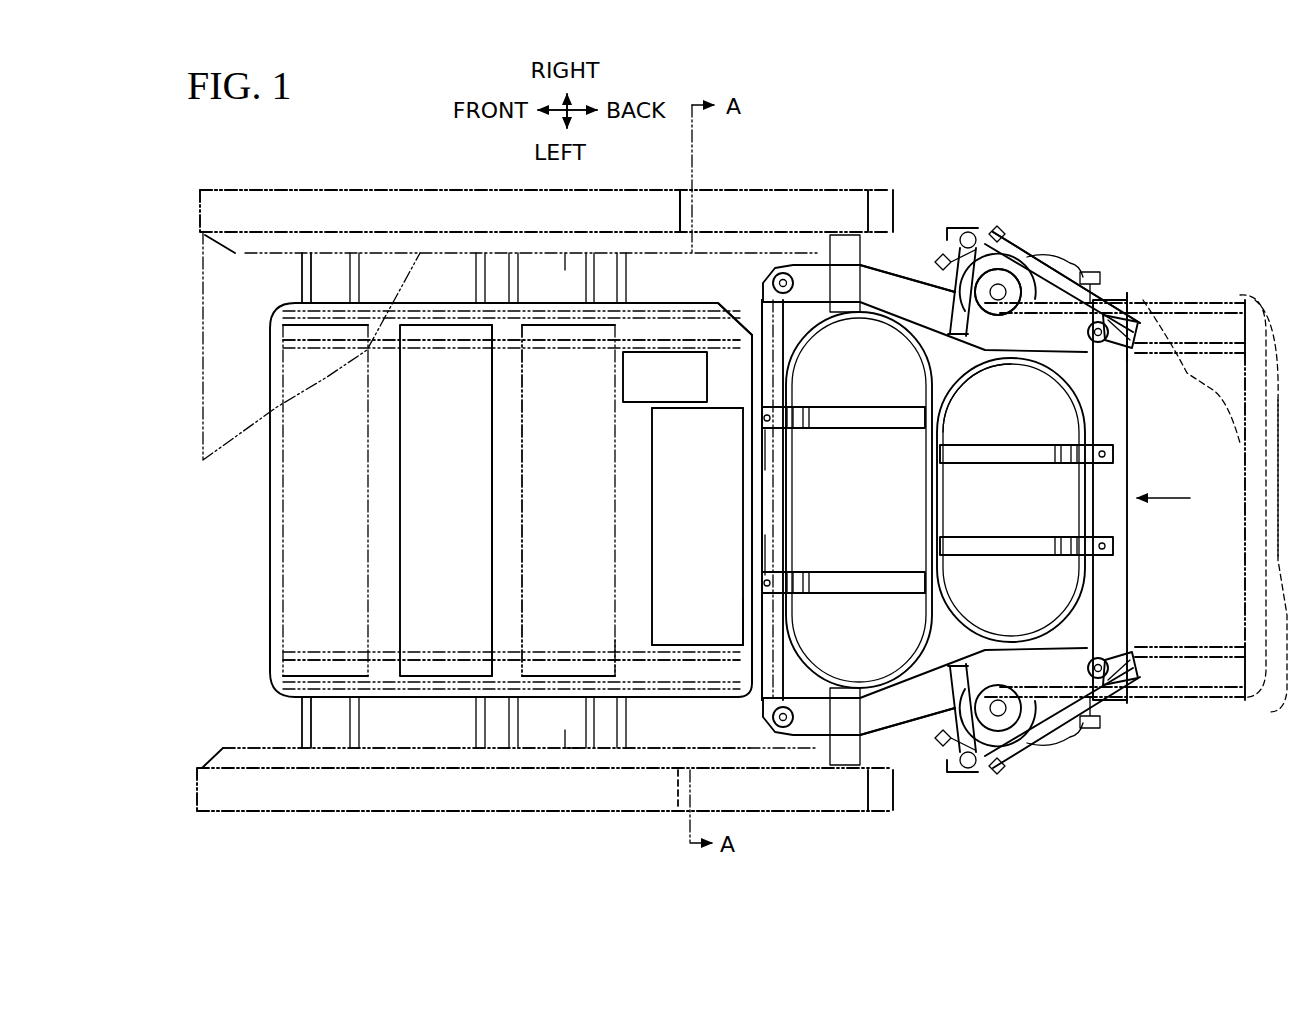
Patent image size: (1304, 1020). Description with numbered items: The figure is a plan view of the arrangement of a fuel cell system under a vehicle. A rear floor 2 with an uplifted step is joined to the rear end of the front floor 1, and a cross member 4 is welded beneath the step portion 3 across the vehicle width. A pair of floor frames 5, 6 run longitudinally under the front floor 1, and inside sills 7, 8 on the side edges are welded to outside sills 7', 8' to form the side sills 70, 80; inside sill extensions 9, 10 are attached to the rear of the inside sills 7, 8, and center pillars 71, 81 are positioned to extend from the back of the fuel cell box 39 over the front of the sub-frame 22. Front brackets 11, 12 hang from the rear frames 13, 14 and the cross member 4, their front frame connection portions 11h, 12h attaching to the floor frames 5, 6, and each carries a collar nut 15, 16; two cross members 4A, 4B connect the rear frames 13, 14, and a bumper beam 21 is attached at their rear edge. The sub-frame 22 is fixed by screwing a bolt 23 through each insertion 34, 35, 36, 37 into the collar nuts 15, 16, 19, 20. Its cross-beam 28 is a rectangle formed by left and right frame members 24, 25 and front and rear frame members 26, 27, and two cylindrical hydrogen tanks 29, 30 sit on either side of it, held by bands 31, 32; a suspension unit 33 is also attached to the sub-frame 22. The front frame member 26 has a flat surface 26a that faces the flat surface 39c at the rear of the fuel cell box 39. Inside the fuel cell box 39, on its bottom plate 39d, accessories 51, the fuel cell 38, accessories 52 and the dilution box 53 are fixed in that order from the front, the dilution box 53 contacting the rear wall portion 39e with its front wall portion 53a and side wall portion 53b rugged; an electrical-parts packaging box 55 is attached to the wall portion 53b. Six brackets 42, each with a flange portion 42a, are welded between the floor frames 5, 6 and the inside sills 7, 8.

The front floor 1 is at (267, 270).
The rear floor 2 is at (1213, 390).
The step portion 3 is at (752, 478).
The cross member 4 is at (754, 408).
The cross member 4A is at (945, 400).
The cross member 4B is at (1090, 405).
The floor frame 5 is at (517, 657).
The floor frame 6 is at (520, 347).
The inside sill 7 is at (545, 774).
The outside sill 7' is at (486, 799).
The inside sill 8 is at (546, 226).
The outside sill 8' is at (311, 287).
The inside sill extension 9 is at (848, 762).
The inside sill extension 10 is at (878, 262).
The front bracket 11 is at (748, 715).
The front frame connection portion 11h is at (733, 643).
The front bracket 12 is at (745, 282).
The front frame connection portion 12h is at (733, 343).
The rear frame 13 is at (1178, 700).
The rear frame 14 is at (1205, 303).
The collar nut 15 is at (814, 783).
The collar nut 16 is at (813, 222).
The collar nut 19 is at (1136, 740).
The collar nut 20 is at (1136, 258).
The bumper beam 21 is at (1285, 568).
The sub-frame 22 is at (907, 260).
The bolt 23 is at (775, 272).
The frame member 24 is at (900, 737).
The frame member 25 is at (893, 290).
The front frame member 26 is at (778, 505).
The flat surface 26a is at (762, 542).
The rear frame member 27 is at (1127, 472).
The cross-beam 28 is at (1027, 305).
The hydrogen tank 29 is at (841, 483).
The hydrogen tank 30 is at (1003, 513).
The band 31 is at (847, 415).
The band 32 is at (1030, 452).
The suspension unit 33 is at (1009, 255).
The insertion 34 is at (784, 730).
The insertion 35 is at (786, 272).
The insertion 36 is at (1130, 700).
The insertion 37 is at (1104, 320).
The fuel cell 38 is at (367, 603).
The fuel cell box 39 is at (270, 538).
The flat surface 39c is at (770, 556).
The bottom plate 39d is at (385, 482).
The wall portion 39e is at (765, 448).
The bracket 42 is at (345, 300).
The flange portion 42a is at (450, 367).
The accessories 51 is at (270, 635).
The accessories 52 is at (615, 640).
The dilution box 53 is at (696, 650).
The wall portion 53a is at (652, 495).
The wall portion 53b is at (678, 400).
The electrical-parts packaging box 55 is at (623, 380).
The side sill 70 is at (373, 814).
The center pillar 71 is at (700, 812).
The side sill 80 is at (314, 188).
The center pillar 81 is at (752, 190).